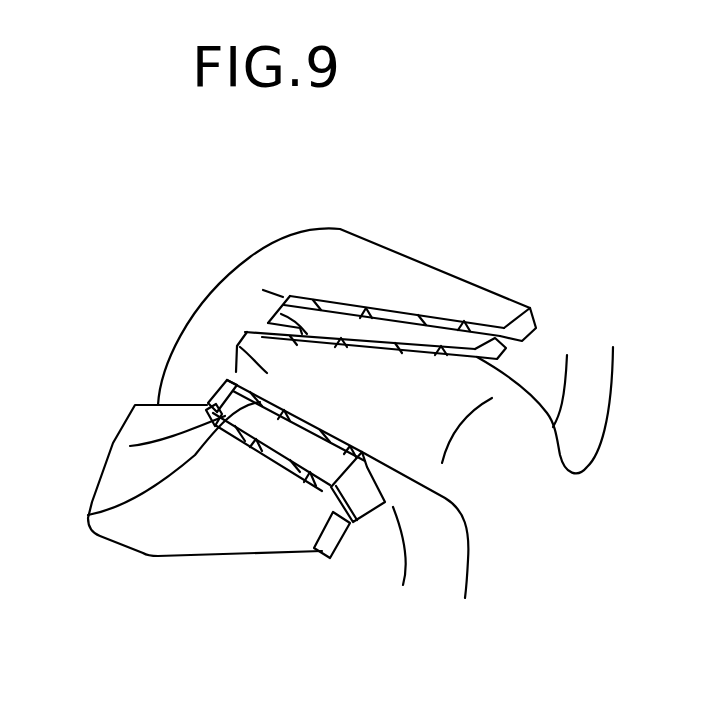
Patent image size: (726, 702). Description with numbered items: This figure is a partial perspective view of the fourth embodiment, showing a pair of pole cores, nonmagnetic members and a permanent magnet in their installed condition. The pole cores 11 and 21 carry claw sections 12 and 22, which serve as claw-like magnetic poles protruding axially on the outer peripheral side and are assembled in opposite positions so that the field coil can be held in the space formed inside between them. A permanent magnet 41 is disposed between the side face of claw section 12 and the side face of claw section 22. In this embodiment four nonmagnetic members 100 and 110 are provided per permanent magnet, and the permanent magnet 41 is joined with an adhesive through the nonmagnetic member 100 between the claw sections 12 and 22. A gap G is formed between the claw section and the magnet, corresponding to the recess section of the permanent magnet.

The pole core 11 is at (520, 493).
The claw section 12 is at (233, 347).
The pole core 21 is at (200, 380).
The claw section 22 is at (282, 274).
The permanent magnet 41 is at (338, 324).
The nonmagnetic member 100 is at (410, 335).
The nonmagnetic member 110 is at (345, 308).
The gap G is at (374, 309).